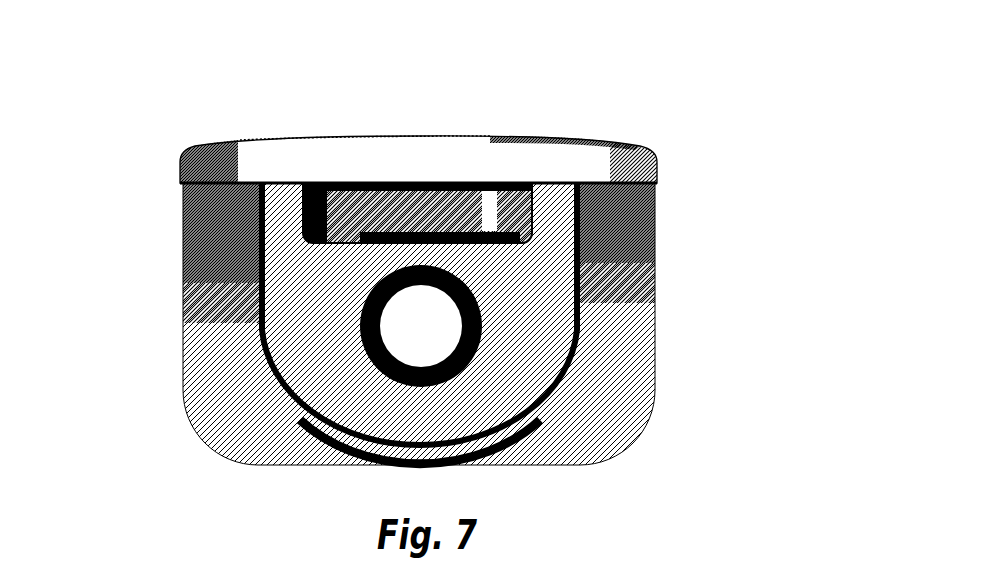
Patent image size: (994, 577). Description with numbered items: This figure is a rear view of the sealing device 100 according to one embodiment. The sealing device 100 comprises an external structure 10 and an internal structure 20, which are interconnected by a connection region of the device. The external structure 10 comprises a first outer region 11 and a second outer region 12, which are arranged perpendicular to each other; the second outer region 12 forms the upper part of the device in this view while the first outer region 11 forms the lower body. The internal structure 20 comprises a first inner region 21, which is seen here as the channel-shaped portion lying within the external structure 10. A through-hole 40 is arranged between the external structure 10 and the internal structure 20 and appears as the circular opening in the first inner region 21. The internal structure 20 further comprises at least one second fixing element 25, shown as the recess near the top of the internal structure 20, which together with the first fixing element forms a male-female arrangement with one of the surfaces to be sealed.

The sealing device 100 is at (436, 269).
The external structure 10 is at (414, 279).
The first outer region 11 is at (572, 410).
The second outer region 12 is at (218, 148).
The internal structure 20 is at (423, 323).
The first inner region 21 is at (517, 317).
The second fixing element 25 is at (412, 227).
The through-hole 40 is at (408, 335).